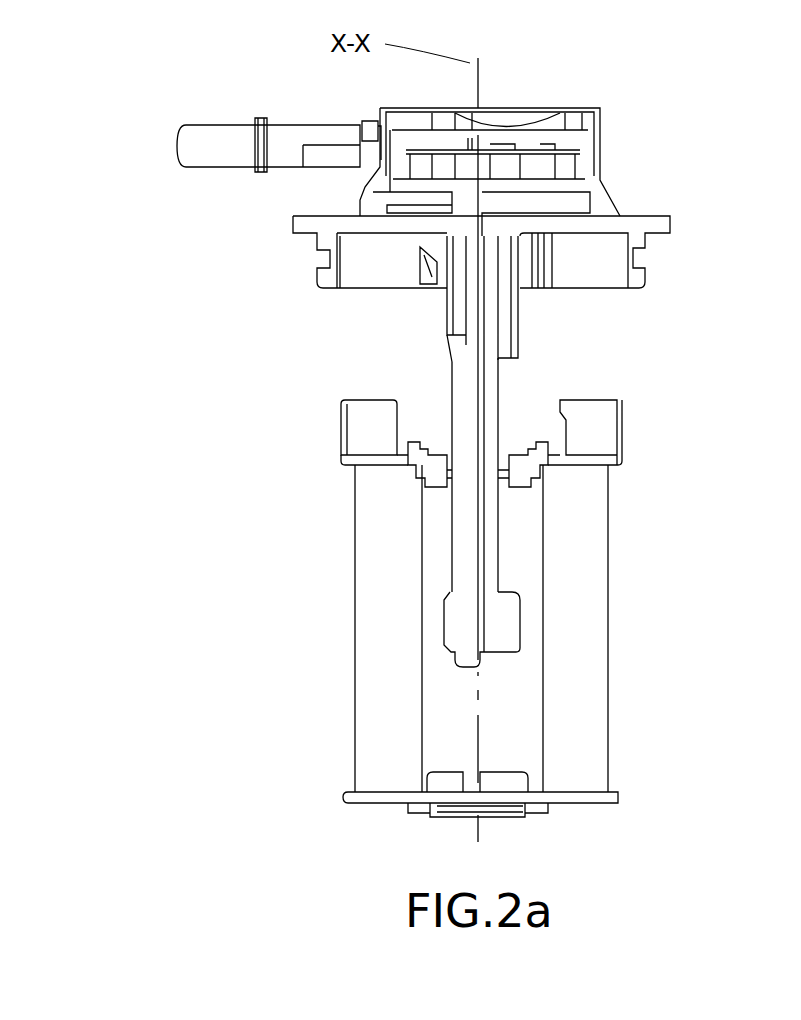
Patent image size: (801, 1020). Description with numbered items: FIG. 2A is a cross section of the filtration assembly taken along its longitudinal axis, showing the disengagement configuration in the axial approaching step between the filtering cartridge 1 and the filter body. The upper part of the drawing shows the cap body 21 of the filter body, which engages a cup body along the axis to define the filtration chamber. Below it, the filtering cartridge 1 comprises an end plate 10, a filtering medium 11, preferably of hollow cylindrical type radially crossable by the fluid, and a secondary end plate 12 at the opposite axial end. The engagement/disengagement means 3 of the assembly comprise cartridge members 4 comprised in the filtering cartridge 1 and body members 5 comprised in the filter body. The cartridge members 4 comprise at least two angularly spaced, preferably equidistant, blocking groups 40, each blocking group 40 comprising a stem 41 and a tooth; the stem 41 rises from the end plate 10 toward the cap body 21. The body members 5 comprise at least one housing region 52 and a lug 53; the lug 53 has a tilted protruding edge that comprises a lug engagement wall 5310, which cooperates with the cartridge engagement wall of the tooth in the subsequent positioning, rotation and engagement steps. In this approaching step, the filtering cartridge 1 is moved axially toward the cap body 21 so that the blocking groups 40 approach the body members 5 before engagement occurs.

The filtering cartridge 1 is at (288, 593).
The engagement/disengagement means 3 is at (737, 232).
The cartridge members 4 is at (270, 436).
The body members 5 is at (360, 257).
The end plate 10 is at (620, 462).
The filtering medium 11 is at (582, 608).
The secondary end plate 12 is at (618, 797).
The cap body 21 is at (198, 221).
The blocking group 40 is at (318, 414).
The stem 41 is at (591, 432).
The housing region 52 is at (438, 265).
The lug 53 is at (398, 273).
The lug engagement wall 5310 is at (415, 285).